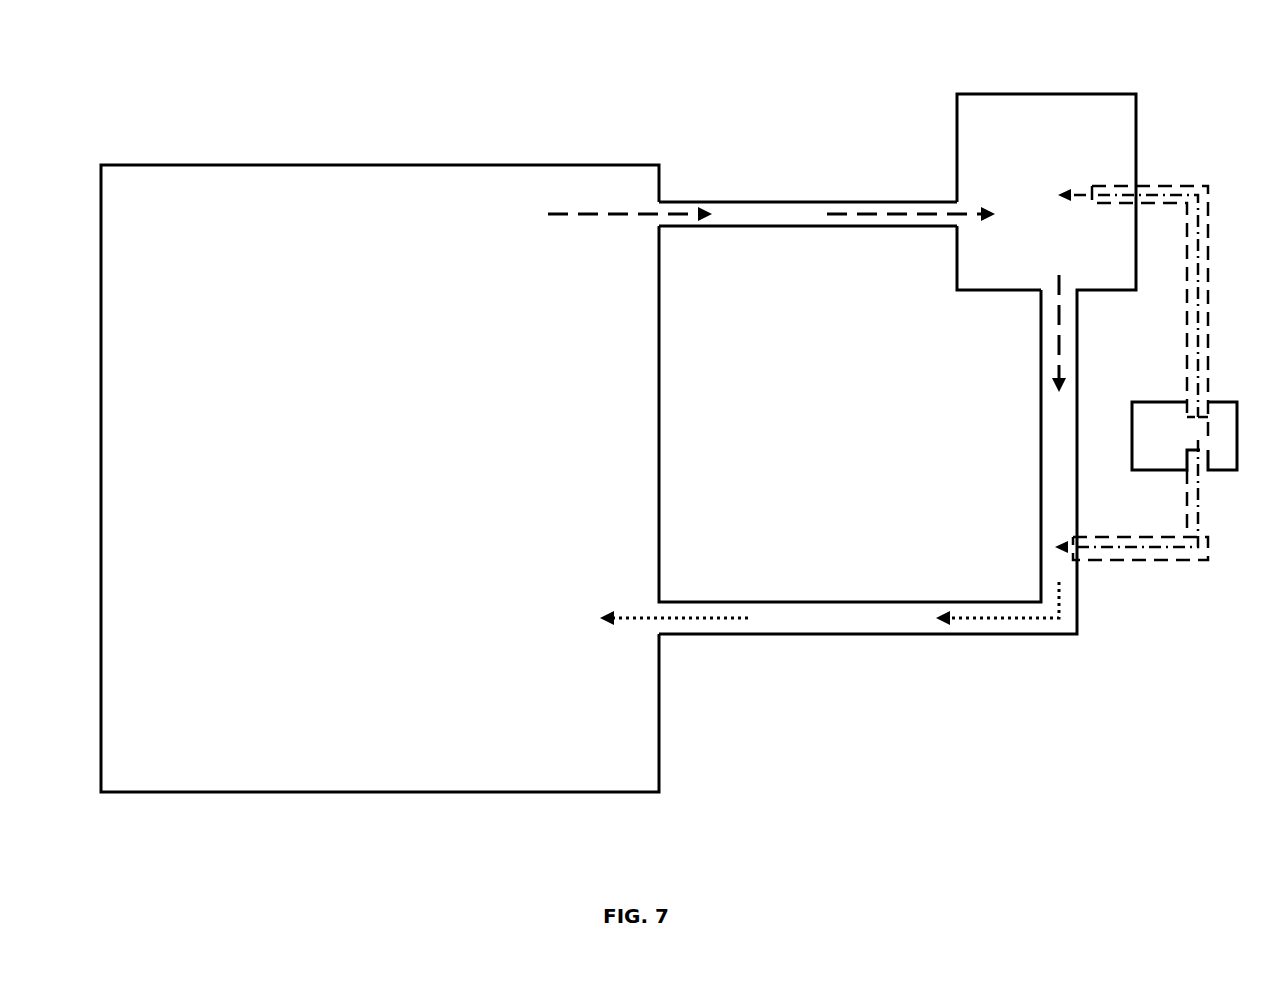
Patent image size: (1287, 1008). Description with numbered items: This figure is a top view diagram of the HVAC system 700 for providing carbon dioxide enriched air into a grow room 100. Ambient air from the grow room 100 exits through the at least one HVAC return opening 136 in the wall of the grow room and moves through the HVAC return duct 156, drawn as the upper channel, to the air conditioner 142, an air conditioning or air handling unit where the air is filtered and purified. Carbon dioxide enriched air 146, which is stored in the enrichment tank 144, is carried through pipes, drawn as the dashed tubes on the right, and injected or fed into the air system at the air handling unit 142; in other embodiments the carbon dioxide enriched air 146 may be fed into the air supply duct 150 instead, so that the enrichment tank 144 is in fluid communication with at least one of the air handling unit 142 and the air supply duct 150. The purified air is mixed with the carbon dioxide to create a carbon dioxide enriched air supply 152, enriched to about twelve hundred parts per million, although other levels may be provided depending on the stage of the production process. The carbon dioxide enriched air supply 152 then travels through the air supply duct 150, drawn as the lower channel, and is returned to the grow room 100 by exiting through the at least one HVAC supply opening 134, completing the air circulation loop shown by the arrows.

The HVAC system 700 is at (656, 110).
The grow room 100 is at (183, 165).
The HVAC supply opening 134 is at (637, 654).
The HVAC return opening 136 is at (645, 236).
The air conditioner 142 is at (1033, 94).
The enrichment tank 144 is at (1153, 402).
The CO2 enriched air 146 is at (1148, 196).
The air supply duct 150 is at (853, 607).
The CO2 enriched air supply 152 is at (633, 613).
The HVAC return duct 156 is at (780, 202).